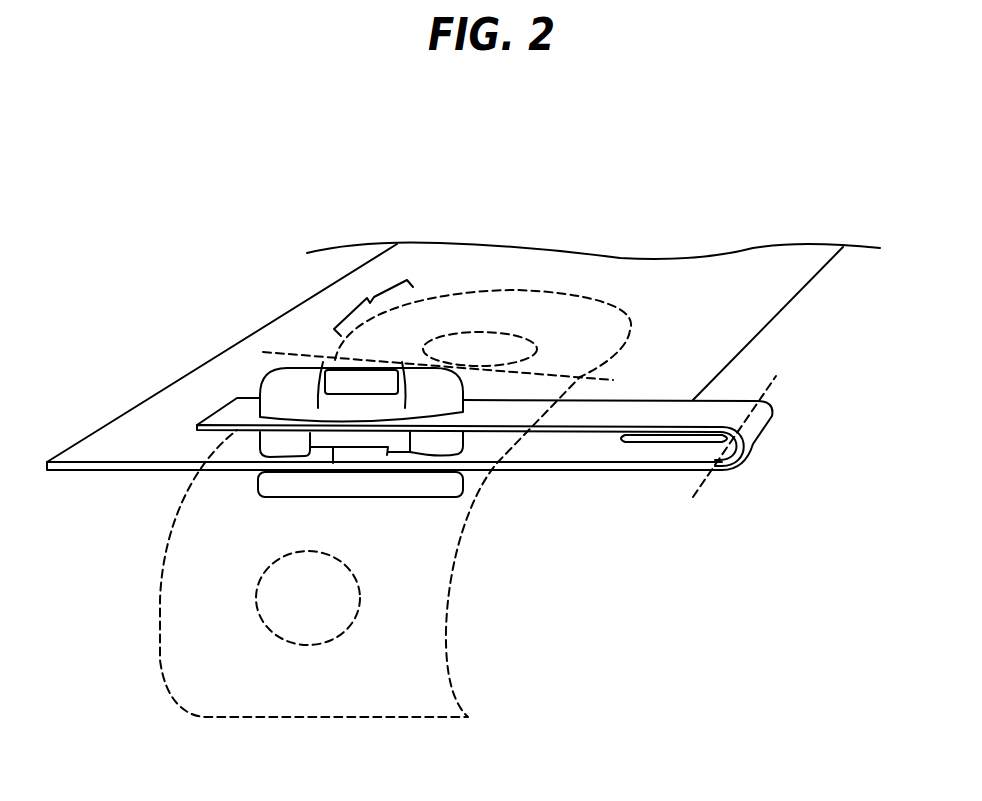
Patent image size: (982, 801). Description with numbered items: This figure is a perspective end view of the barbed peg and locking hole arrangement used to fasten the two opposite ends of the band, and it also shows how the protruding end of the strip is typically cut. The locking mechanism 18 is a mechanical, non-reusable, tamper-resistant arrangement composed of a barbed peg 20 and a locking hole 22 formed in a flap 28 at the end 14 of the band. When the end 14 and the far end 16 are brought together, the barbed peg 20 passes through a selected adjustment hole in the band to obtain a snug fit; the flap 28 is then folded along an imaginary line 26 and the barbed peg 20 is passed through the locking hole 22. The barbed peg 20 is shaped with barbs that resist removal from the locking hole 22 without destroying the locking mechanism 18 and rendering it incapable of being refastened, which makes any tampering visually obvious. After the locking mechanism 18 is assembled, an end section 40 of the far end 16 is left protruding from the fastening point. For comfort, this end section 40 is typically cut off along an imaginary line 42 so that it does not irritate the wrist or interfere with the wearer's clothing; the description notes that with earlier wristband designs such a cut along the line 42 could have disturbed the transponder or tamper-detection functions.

The end 14 is at (128, 472).
The far end 16 is at (520, 290).
The locking mechanism 18 is at (215, 309).
The barbed peg 20 is at (287, 395).
The locking hole 22 is at (410, 468).
The imaginary line 26 is at (709, 490).
The flap 28 is at (647, 400).
The end section 40 is at (373, 307).
The imaginary line 42 is at (302, 341).